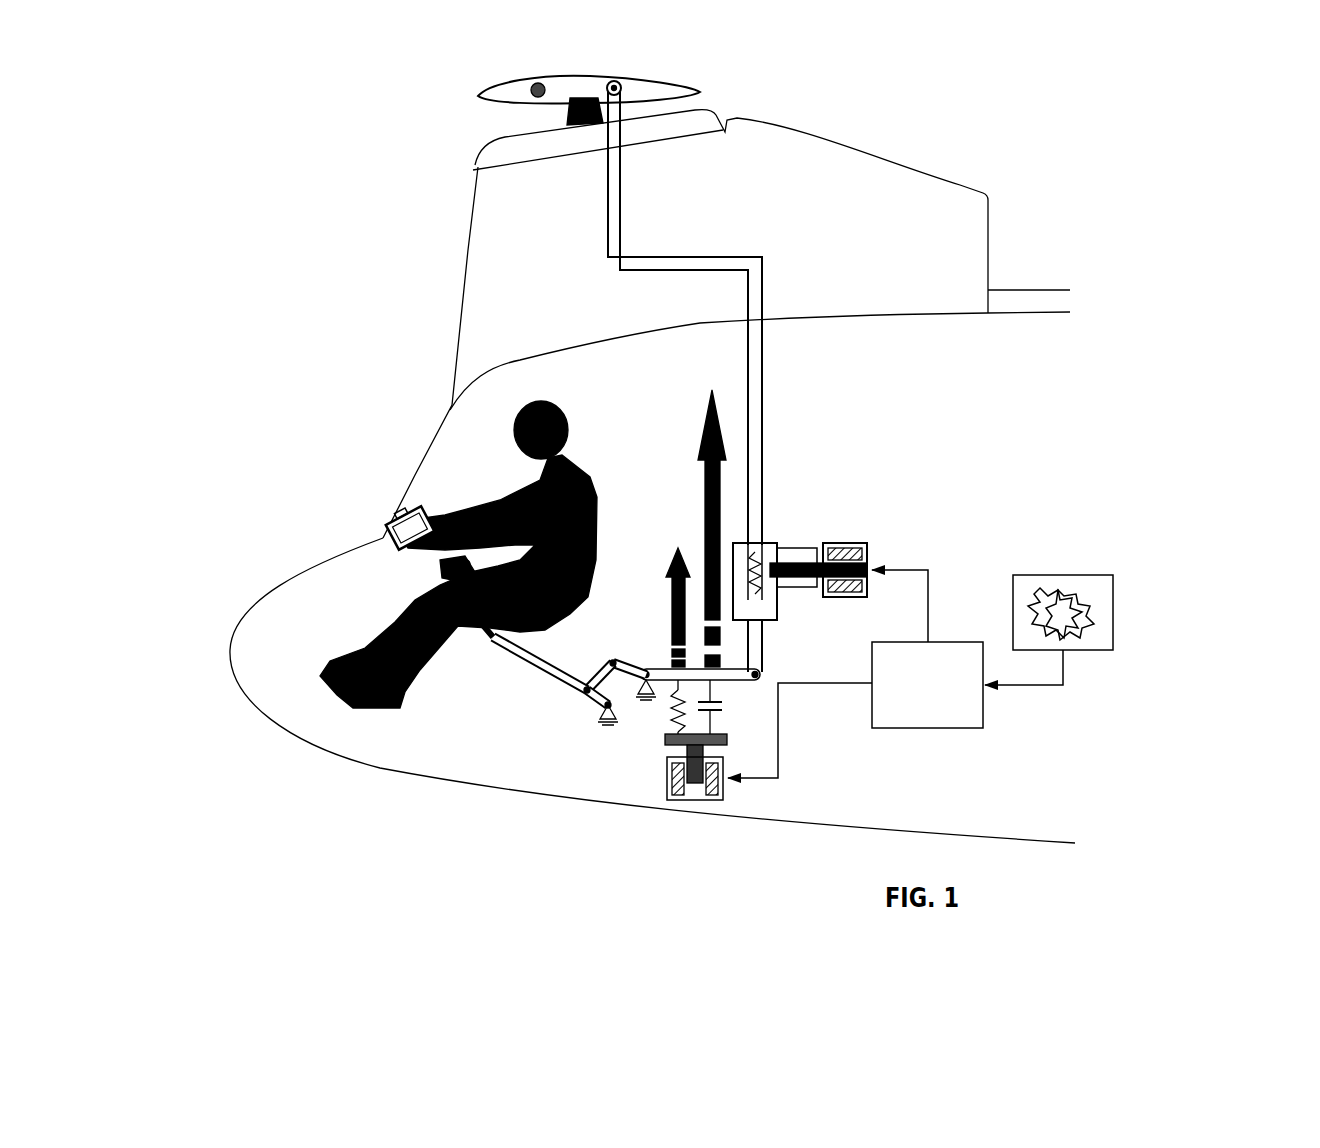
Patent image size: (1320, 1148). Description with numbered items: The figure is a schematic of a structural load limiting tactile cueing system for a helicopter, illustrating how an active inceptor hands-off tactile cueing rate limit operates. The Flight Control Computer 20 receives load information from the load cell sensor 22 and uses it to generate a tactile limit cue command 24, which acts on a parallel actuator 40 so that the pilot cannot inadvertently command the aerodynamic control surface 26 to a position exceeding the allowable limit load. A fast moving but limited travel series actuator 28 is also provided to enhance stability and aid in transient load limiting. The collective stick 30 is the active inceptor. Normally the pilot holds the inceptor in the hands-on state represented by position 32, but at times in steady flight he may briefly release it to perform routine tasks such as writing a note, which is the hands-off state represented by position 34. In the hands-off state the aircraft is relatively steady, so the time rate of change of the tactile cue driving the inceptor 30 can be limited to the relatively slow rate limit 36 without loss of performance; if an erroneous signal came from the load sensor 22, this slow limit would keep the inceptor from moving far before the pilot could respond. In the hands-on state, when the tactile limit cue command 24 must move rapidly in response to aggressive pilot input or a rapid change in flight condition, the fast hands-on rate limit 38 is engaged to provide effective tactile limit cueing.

The Flight Control Computer 20 is at (951, 689).
The load cell sensor 22 is at (1125, 630).
The tactile limit cue command 24 is at (903, 748).
The aerodynamic control surface 26 is at (478, 97).
The series actuator 28 is at (877, 537).
The collective stick 30 is at (535, 658).
The hands-on state position 32 is at (488, 644).
The hands-off state position 34 is at (387, 538).
The slow hands-off state rate limit 36 is at (668, 540).
The fast hands-on state rate limit 38 is at (730, 434).
The parallel actuator 40 is at (658, 787).